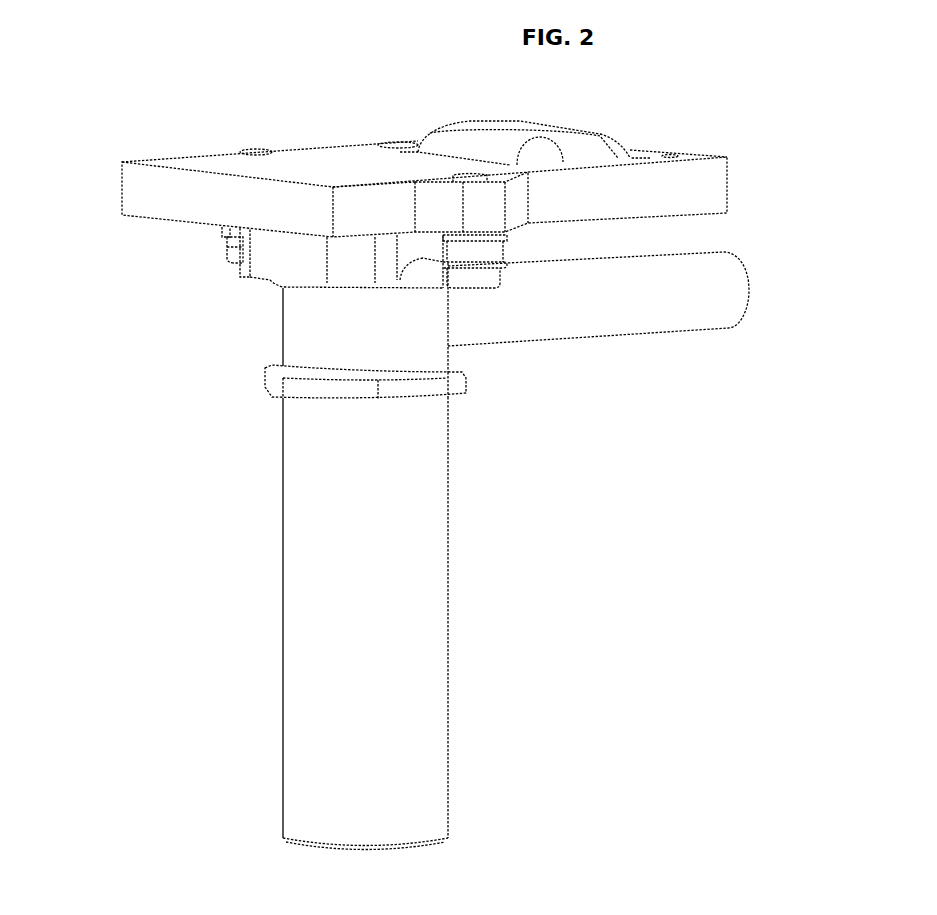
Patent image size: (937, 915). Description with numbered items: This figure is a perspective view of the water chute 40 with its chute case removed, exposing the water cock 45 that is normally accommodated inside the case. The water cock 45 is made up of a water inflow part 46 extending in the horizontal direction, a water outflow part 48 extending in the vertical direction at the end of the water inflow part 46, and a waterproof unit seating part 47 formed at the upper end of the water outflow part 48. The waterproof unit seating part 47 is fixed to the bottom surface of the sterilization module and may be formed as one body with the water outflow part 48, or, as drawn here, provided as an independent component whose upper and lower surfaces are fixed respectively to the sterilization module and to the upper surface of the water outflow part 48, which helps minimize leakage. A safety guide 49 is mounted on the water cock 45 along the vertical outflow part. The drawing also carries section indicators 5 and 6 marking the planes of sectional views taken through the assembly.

The water chute 40 is at (775, 432).
The water cock 45 is at (675, 466).
The water inflow part 46 is at (660, 322).
The waterproof unit seating part 47 is at (487, 258).
The water outflow part 48 is at (432, 355).
The safety guide 49 is at (433, 680).
The section line 5 is at (283, 552).
The section line 6 is at (215, 195).